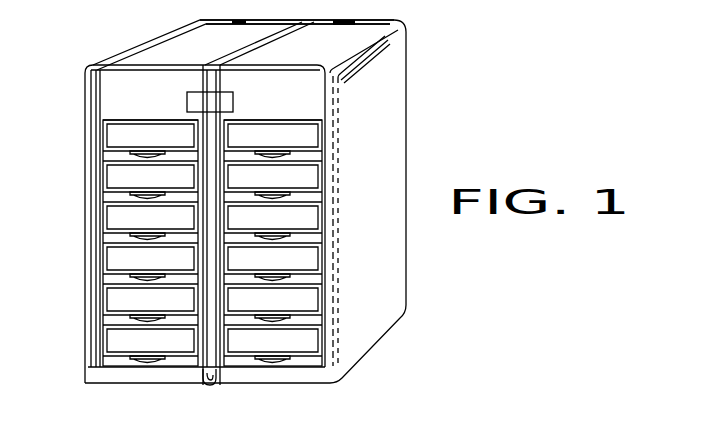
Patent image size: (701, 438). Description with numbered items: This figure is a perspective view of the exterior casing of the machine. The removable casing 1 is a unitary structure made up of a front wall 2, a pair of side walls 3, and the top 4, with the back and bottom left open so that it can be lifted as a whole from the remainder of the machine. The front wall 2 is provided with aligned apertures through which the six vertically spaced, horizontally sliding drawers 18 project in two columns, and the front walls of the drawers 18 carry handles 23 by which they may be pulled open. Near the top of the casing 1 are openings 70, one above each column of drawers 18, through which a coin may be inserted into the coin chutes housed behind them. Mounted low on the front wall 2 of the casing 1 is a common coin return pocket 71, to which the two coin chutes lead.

The casing 1 is at (380, 117).
The front wall 2 is at (106, 98).
The side walls 3 is at (386, 70).
The top 4 is at (173, 46).
The drawers 18 is at (117, 194).
The handles 23 is at (162, 365).
The opening 70 is at (240, 20).
The coin return pocket 71 is at (213, 384).